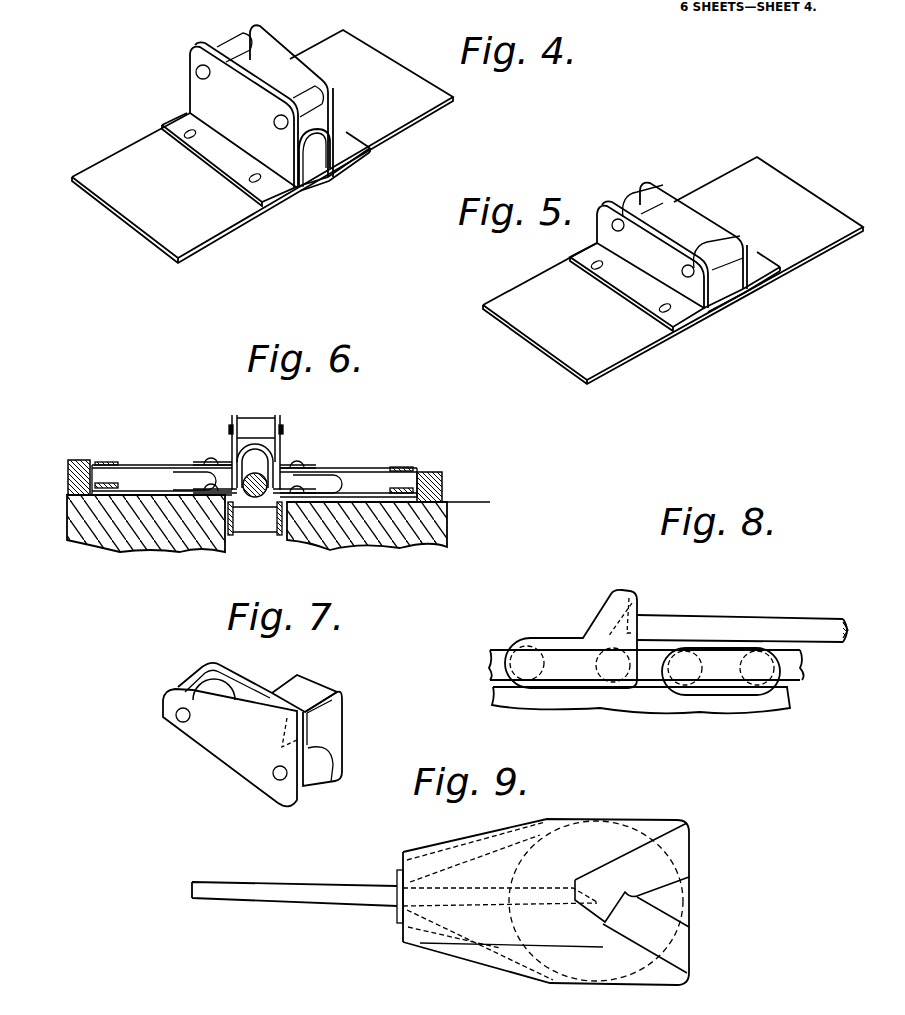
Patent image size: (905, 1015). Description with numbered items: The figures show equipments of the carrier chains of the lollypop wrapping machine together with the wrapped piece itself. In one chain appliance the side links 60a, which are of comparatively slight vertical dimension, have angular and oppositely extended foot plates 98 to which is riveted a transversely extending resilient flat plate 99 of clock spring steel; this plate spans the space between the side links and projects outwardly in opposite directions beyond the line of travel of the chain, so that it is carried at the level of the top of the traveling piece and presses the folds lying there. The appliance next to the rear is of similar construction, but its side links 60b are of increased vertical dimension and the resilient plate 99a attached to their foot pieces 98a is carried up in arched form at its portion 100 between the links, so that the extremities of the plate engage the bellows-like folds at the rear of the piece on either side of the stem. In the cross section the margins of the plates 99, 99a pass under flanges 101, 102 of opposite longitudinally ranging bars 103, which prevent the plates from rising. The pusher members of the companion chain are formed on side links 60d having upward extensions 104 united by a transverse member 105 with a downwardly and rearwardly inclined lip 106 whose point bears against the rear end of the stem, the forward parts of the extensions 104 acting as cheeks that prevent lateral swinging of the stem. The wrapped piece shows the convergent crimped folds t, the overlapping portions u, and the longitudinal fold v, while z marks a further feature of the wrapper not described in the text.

In FIG. 5, the side links 60a is at (668, 210).
In FIG. 4, the side links 60b is at (261, 106).
In FIG. 7, the side links 60d is at (230, 742).
In FIG. 8, the side links 60d is at (608, 615).
In FIG. 5, the foot plates 98 is at (757, 265).
In FIG. 6, the foot plates 98 is at (308, 463).
In FIG. 4, the foot pieces 98a is at (343, 143).
In FIG. 6, the foot pieces 98a is at (195, 480).
In FIG. 5, the resilient flat plate 99 is at (673, 270).
In FIG. 6, the resilient flat plate 99 is at (367, 472).
In FIG. 4, the resilient plate 99a is at (262, 146).
In FIG. 6, the resilient plate 99a is at (147, 487).
In FIG. 4, the arched portion 100 is at (318, 162).
In FIG. 6, the flange 101 is at (100, 462).
In FIG. 6, the flange 102 is at (107, 482).
In FIG. 6, the longitudinally ranging bars 103 is at (70, 460).
In FIG. 7, the upward extensions 104 is at (338, 711).
In FIG. 8, the upward extensions 104 is at (638, 608).
In FIG. 7, the transverse uniting member 105 is at (303, 690).
In FIG. 7, the lip or extension 106 is at (335, 728).
In FIG. 8, the lip or extension 106 is at (613, 623).
In FIG. 9, the crimped folds t is at (448, 848).
In FIG. 9, the overlapping wrapper portions u is at (632, 898).
In FIG. 9, the longitudinal fold v is at (553, 926).
In FIG. 9, the circular path z is at (497, 953).